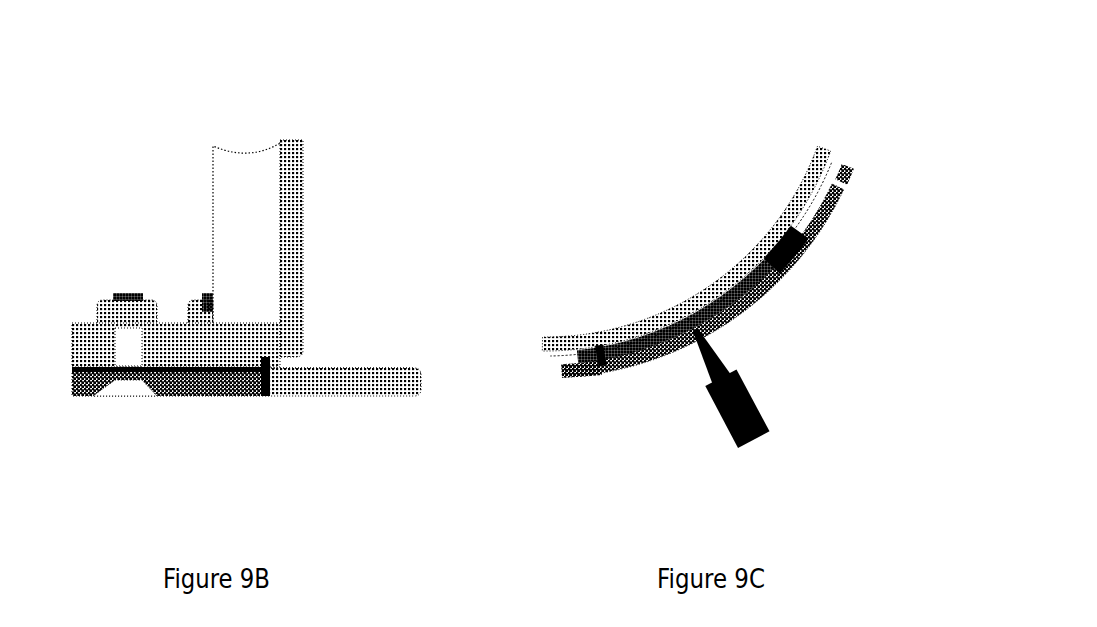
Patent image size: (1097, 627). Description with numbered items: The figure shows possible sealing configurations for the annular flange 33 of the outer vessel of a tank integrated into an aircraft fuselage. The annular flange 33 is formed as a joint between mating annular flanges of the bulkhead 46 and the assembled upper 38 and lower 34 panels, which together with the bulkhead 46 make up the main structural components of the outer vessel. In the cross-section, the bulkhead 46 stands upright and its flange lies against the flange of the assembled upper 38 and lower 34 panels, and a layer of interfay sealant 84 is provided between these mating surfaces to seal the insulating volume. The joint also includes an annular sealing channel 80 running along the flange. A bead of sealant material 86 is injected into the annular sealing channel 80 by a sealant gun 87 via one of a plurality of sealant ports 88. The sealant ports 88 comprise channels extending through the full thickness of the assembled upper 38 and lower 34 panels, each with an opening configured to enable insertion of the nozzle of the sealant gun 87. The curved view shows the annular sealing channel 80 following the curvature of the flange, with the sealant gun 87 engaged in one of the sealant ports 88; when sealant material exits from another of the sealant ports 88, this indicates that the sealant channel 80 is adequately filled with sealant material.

In FIG. 9B, the annular flange 33 is at (110, 428).
In FIG. 9B, the bulkhead 46 is at (293, 217).
In FIG. 9C, the bulkhead 46 is at (695, 297).
In FIG. 9B, the annular sealing channel 80 is at (270, 360).
In FIG. 9C, the annular sealing channel 80 is at (620, 335).
In FIG. 9B, the interfay sealant 84 is at (178, 371).
In FIG. 9B, the bead of sealant material 86 is at (273, 366).
In FIG. 9C, the bead of sealant material 86 is at (596, 347).
In FIG. 9C, the sealant gun 87 is at (758, 397).
In FIG. 9B, the sealant port 88 is at (268, 390).
In FIG. 9C, the sealant port 88 is at (795, 265).
In FIG. 9B, the upper panel 38 is at (393, 426).
In FIG. 9C, the upper panel 38 is at (552, 406).
In FIG. 9B, the lower panel 34 is at (343, 396).
In FIG. 9C, the lower panel 34 is at (570, 373).